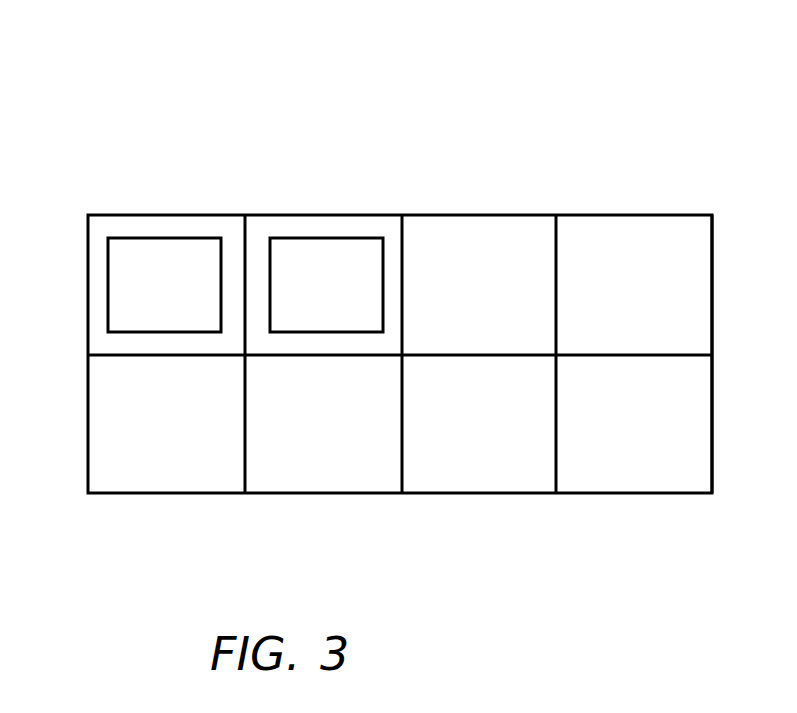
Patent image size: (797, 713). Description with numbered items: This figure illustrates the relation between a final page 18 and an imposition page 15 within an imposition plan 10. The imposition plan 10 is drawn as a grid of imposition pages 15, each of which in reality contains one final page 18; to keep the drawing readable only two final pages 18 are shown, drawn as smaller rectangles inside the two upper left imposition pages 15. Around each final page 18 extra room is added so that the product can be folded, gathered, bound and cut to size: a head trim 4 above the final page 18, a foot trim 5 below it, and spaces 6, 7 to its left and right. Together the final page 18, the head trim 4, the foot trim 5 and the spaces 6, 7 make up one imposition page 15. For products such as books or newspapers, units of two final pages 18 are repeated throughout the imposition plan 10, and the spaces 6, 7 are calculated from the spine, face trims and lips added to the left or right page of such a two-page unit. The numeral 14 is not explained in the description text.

The imposition plan 10 is at (614, 617).
The substrate 14 is at (712, 492).
The imposition page 15 is at (612, 260).
The final page 18 is at (245, 213).
The head trim 4 is at (155, 223).
The space 7 is at (232, 265).
The space 6 is at (95, 278).
The foot trim 5 is at (160, 345).